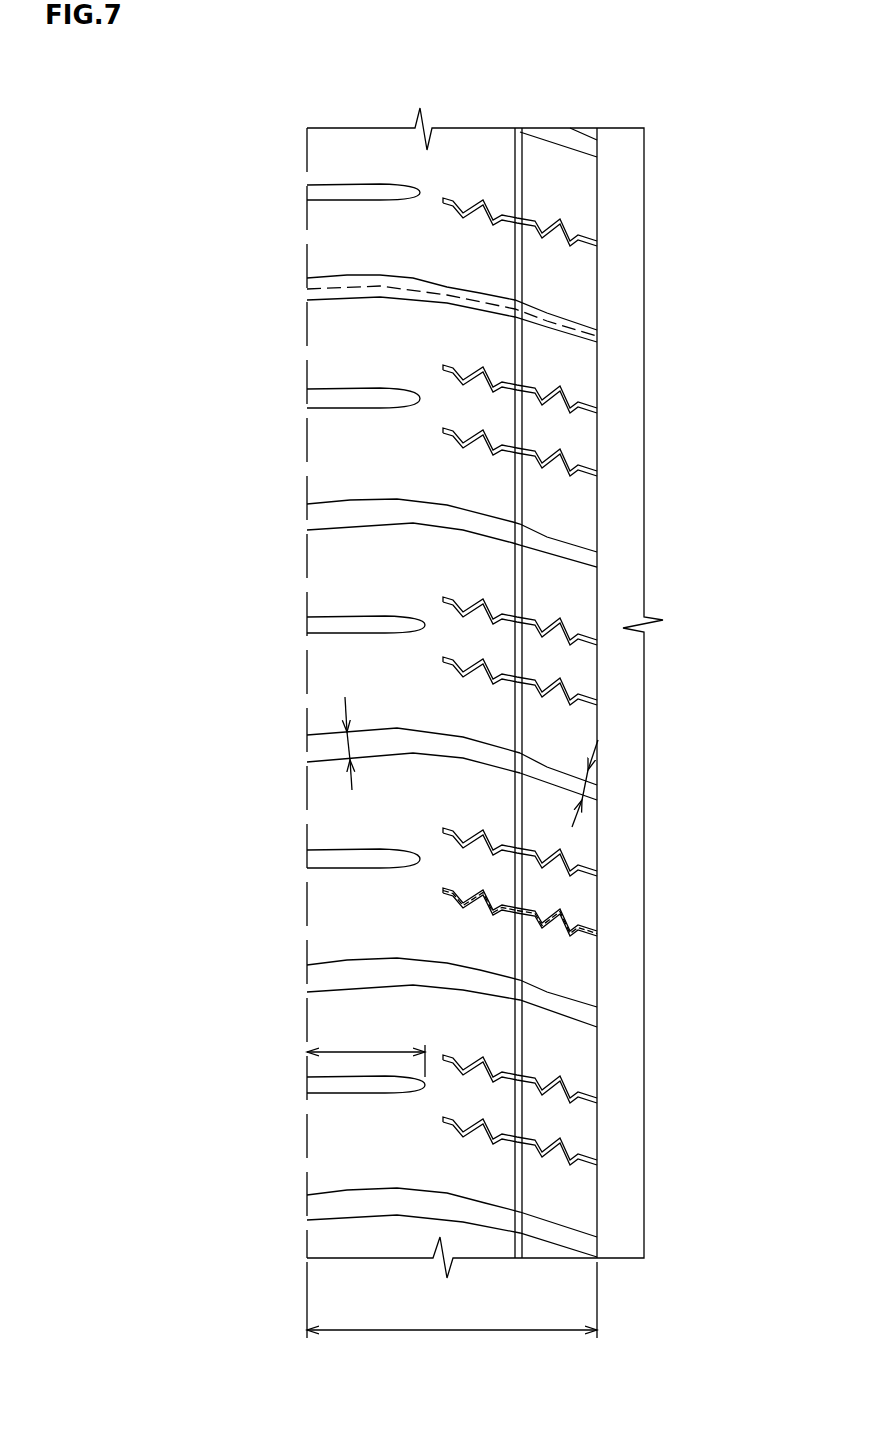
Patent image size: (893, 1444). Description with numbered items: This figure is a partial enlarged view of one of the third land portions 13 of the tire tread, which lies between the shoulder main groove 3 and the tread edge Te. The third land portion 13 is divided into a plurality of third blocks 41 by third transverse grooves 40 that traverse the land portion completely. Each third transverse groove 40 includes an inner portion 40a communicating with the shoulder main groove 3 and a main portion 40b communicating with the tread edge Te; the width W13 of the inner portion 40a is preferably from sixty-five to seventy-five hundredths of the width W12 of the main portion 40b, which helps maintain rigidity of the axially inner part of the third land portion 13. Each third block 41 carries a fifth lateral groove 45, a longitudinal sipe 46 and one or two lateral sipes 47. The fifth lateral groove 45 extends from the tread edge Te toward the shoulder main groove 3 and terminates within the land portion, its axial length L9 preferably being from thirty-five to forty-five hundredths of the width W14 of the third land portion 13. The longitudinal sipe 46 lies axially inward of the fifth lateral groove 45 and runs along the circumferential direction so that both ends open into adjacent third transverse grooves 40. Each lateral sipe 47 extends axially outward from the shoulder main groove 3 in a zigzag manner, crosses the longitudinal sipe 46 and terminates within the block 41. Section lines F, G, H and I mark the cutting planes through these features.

The shoulder main groove 3 is at (622, 183).
The third land portion 13 is at (463, 173).
The tread edge Te is at (305, 158).
The third transverse groove 40 is at (468, 692).
The inner portion 40a is at (573, 552).
The main portion 40b is at (413, 513).
The third block 41 is at (469, 681).
The fifth lateral groove 45 is at (362, 395).
The longitudinal sipe 46 is at (520, 422).
The lateral sipe 47 is at (567, 460).
The section line F- F is at (305, 288).
The section line G- G is at (537, 580).
The section line H- H is at (519, 1000).
The section line I- I is at (444, 890).
The width of the main portion W12 is at (343, 745).
The width of the inner portion W13 is at (578, 798).
The width of the third land portion W14 is at (452, 1315).
The length of the fifth lateral groove L9 is at (363, 1052).